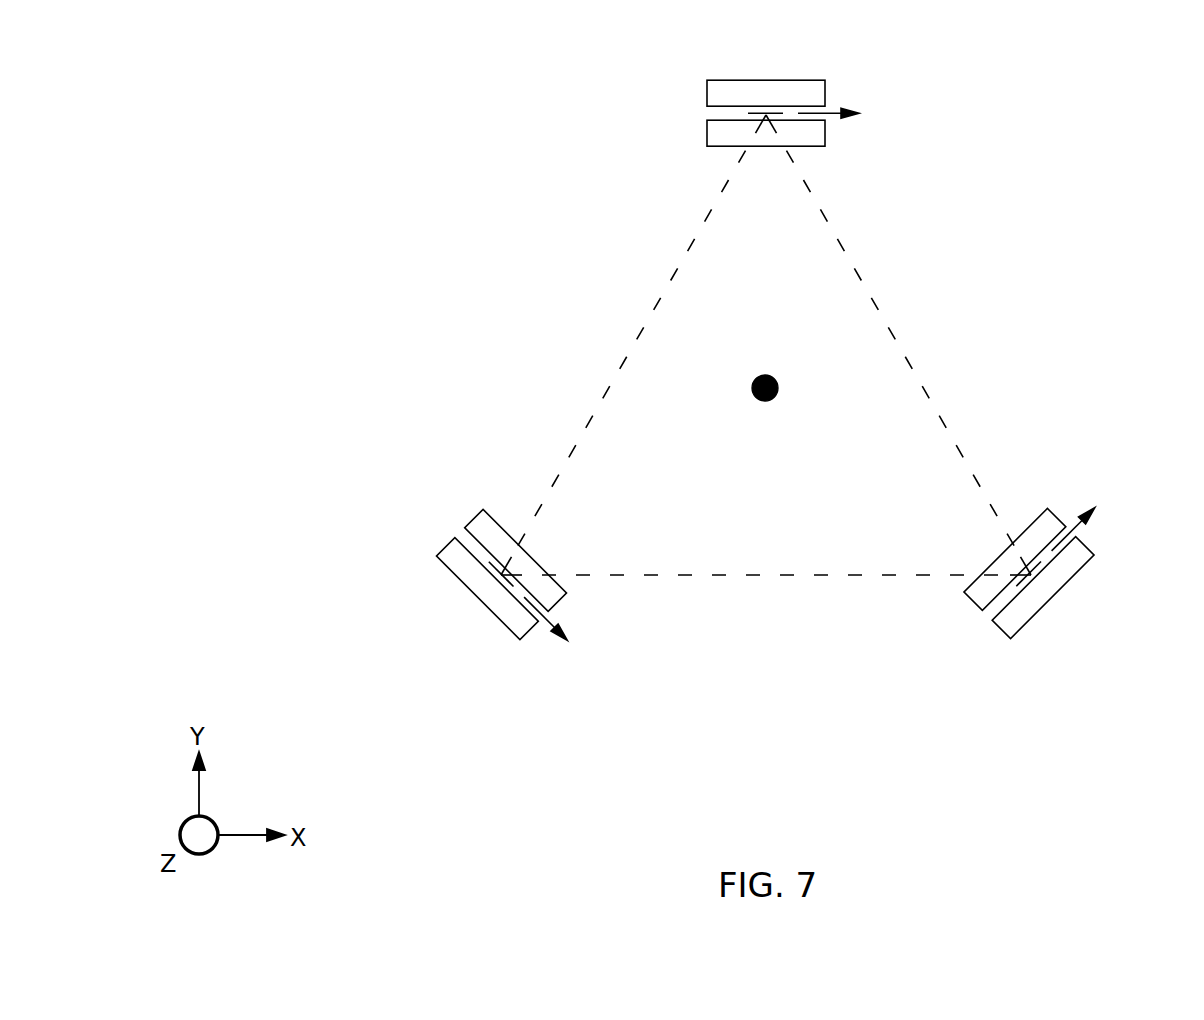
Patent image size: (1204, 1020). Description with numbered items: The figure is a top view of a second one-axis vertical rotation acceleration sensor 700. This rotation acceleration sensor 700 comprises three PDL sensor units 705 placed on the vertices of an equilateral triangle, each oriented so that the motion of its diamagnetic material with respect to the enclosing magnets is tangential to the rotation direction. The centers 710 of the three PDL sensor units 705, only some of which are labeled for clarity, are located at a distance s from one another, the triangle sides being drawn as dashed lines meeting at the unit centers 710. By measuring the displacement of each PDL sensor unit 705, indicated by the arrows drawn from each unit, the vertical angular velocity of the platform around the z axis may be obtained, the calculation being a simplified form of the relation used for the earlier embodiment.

The rotation acceleration sensor 700 is at (767, 353).
The PDL sensor unit 705 is at (808, 93).
The center 710 is at (510, 577).